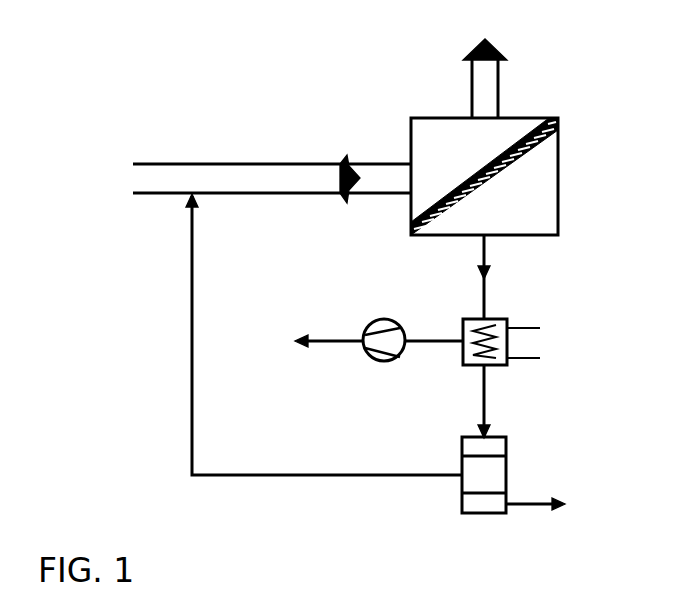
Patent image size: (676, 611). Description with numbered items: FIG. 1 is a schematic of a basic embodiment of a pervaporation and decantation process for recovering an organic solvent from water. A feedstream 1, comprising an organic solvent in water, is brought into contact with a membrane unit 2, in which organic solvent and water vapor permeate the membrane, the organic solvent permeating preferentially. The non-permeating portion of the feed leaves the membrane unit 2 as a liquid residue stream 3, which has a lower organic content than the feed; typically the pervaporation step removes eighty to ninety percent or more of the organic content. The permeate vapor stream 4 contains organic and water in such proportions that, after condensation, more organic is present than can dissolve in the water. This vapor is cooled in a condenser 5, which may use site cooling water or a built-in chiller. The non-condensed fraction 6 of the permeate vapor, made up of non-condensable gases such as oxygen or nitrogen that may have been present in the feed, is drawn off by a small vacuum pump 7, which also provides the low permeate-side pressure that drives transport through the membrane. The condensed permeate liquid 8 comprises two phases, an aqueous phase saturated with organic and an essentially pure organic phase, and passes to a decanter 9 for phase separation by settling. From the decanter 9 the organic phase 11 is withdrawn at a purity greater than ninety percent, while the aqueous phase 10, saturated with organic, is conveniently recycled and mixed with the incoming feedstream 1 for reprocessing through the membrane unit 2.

The feedstream 1 is at (272, 168).
The membrane unit 2 is at (484, 176).
The liquid residue stream 3 is at (485, 64).
The permeate vapor stream 4 is at (494, 277).
The condenser 5 is at (501, 342).
The non-condensed fraction 6 is at (320, 343).
The vacuum pump 7 is at (413, 327).
The condensed permeate liquid 8 is at (492, 401).
The decanter 9 is at (484, 475).
The aqueous phase 10 is at (309, 334).
The organic phase 11 is at (550, 504).